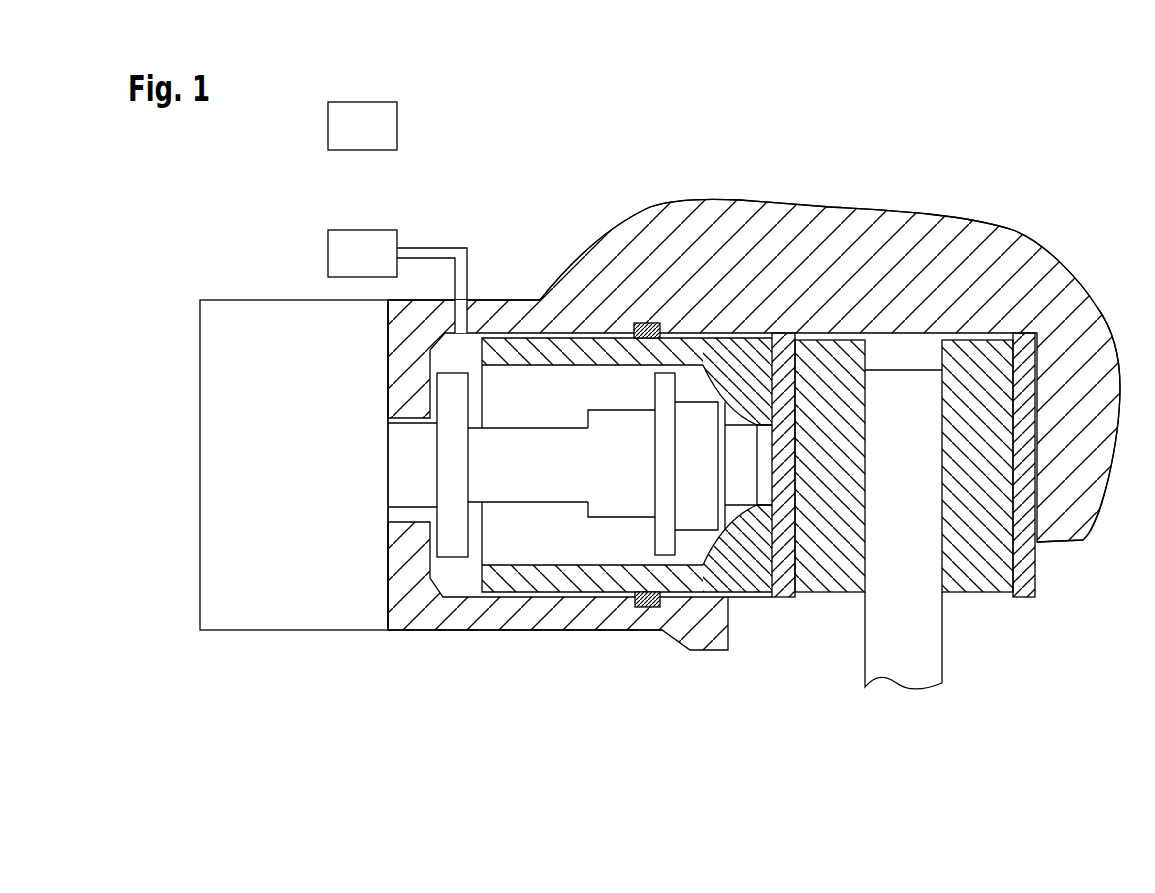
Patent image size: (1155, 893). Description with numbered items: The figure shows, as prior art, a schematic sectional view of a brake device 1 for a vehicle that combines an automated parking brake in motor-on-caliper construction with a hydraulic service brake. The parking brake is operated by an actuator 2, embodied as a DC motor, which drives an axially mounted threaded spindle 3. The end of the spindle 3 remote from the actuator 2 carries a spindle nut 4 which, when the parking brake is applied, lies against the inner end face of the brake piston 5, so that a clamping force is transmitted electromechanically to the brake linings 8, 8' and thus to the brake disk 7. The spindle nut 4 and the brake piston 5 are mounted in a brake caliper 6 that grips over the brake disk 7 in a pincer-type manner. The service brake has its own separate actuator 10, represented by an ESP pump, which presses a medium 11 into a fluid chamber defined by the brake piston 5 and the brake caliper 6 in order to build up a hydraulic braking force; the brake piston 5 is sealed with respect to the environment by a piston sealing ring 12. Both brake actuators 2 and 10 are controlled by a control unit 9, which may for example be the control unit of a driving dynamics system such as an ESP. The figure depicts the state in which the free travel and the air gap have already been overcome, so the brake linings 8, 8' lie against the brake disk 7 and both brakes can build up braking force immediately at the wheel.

The brake device 1 is at (1026, 169).
The actuator 2 is at (253, 278).
The spindle 3 is at (557, 490).
The spindle nut 4 is at (623, 498).
The brake piston 5 is at (523, 583).
The brake caliper 6 is at (832, 215).
The brake disk 7 is at (907, 667).
The brake lining 8 is at (818, 518).
The brake lining 8' is at (988, 518).
The control unit 9 is at (413, 123).
The actuator 10 is at (413, 237).
The medium 11 is at (463, 582).
The piston sealing ring 12 is at (640, 607).